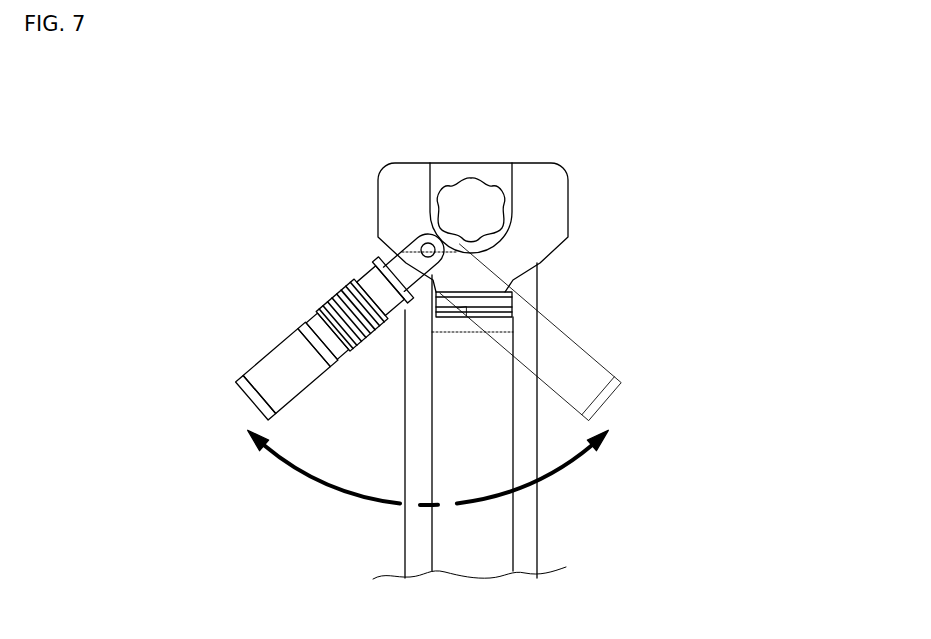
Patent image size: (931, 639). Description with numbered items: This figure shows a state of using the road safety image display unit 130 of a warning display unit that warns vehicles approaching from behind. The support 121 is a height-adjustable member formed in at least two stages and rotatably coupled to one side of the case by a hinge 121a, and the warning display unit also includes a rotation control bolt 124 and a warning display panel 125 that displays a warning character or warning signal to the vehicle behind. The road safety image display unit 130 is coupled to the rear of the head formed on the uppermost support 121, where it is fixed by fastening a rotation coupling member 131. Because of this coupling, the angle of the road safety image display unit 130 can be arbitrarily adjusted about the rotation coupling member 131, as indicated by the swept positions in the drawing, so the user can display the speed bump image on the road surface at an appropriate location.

The support 121 is at (450, 408).
The hinge 121a is at (552, 210).
The rotation control bolt 124 is at (469, 205).
The warning display panel 125 is at (530, 520).
The road safety image display unit 130 is at (282, 362).
The rotation coupling member 131 is at (400, 246).